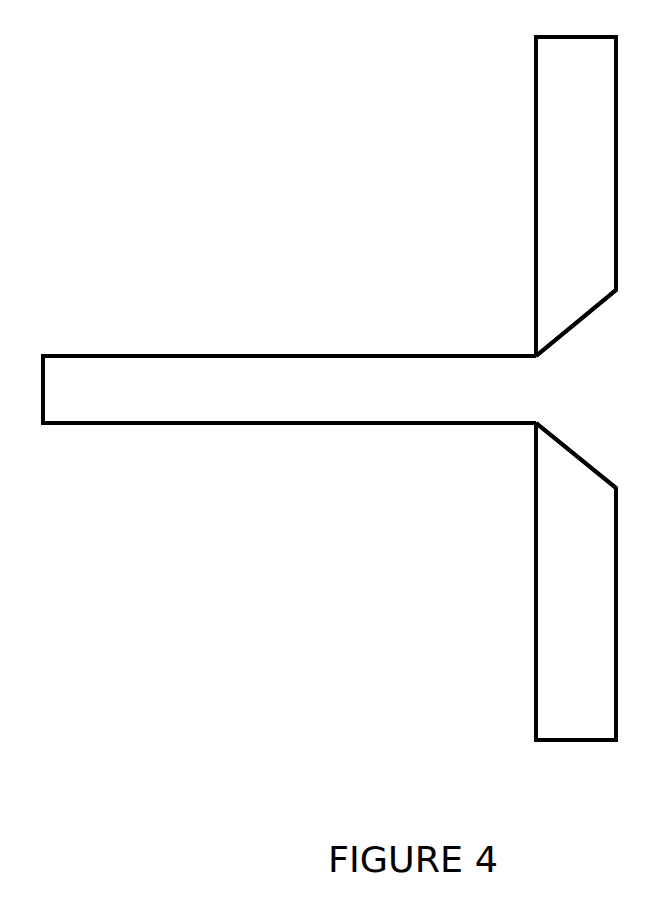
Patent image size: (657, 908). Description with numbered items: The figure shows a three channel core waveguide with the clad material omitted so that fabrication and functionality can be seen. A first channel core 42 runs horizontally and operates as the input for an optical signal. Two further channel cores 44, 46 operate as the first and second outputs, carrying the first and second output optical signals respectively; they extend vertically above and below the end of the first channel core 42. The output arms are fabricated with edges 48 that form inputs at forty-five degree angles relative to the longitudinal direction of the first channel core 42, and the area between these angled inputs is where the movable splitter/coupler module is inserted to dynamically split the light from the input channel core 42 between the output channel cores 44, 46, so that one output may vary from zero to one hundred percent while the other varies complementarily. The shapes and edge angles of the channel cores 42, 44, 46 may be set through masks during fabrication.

The first channel core 42 is at (177, 355).
The channel core 44 is at (534, 142).
The channel core 46 is at (534, 594).
The edges 48 is at (586, 318).